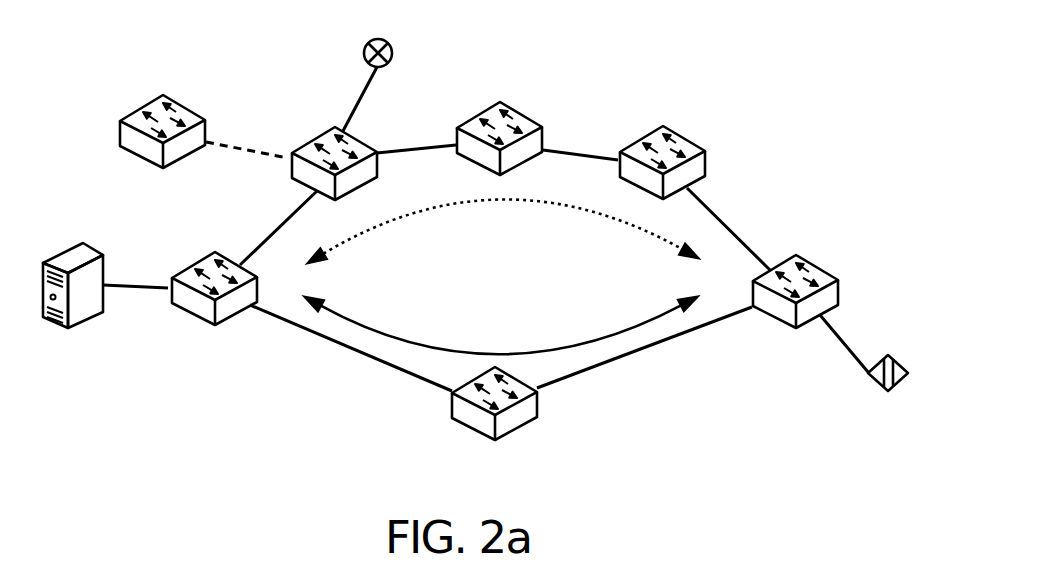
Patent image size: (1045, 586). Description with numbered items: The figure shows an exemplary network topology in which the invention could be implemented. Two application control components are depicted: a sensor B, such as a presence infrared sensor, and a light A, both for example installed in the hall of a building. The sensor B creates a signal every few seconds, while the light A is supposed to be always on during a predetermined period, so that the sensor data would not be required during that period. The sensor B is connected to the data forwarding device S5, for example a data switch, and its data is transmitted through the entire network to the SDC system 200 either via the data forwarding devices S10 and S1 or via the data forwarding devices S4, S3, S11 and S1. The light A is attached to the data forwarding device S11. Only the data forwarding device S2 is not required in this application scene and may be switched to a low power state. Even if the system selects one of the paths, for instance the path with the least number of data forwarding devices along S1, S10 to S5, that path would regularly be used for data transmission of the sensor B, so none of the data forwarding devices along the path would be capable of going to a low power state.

The data forwarding device S1 is at (214, 313).
The data forwarding device S2 is at (162, 155).
The data forwarding device S3 is at (499, 117).
The data forwarding device S4 is at (688, 167).
The data forwarding device S5 is at (795, 315).
The data forwarding device S10 is at (494, 428).
The data forwarding device S11 is at (323, 141).
The SDC system 200 is at (67, 309).
The light A is at (378, 33).
The sensor B is at (905, 375).